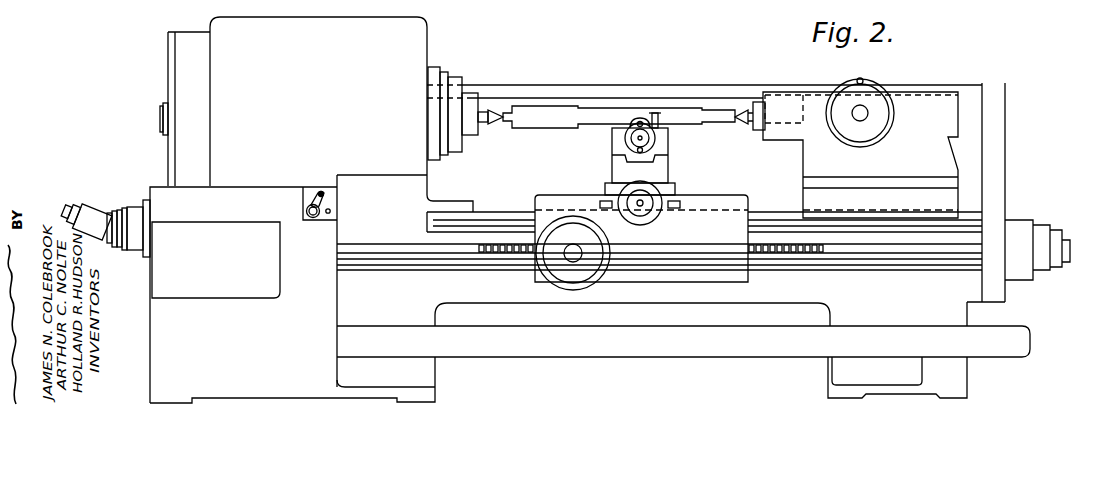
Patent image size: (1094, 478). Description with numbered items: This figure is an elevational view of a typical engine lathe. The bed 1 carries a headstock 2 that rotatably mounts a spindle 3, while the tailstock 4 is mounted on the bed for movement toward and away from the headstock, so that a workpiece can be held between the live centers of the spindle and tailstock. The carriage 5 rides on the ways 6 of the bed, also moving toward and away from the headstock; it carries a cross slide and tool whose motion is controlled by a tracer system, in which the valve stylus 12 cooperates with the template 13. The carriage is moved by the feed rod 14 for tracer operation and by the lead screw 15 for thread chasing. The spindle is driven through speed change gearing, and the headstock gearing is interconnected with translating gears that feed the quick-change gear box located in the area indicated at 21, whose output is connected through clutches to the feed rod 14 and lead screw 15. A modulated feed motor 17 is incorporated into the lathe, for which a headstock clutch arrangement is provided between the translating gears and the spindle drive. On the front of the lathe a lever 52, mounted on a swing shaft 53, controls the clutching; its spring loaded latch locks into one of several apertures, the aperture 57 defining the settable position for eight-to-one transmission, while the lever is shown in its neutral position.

The bed 1 is at (787, 292).
The headstock 2 is at (320, 99).
The spindle 3 is at (456, 72).
The tailstock 4 is at (911, 157).
The carriage 5 is at (676, 178).
The ways 6 is at (498, 212).
The valve stylus 12 is at (656, 113).
The template 13 is at (600, 108).
The feed rod 14 is at (837, 266).
The lead screw 15 is at (848, 249).
The modulated feed motor 17 is at (115, 212).
The quick-change gear box area 21 is at (202, 290).
The lever 52 is at (316, 219).
The swing shaft 53 is at (321, 191).
The aperture 57 is at (331, 211).